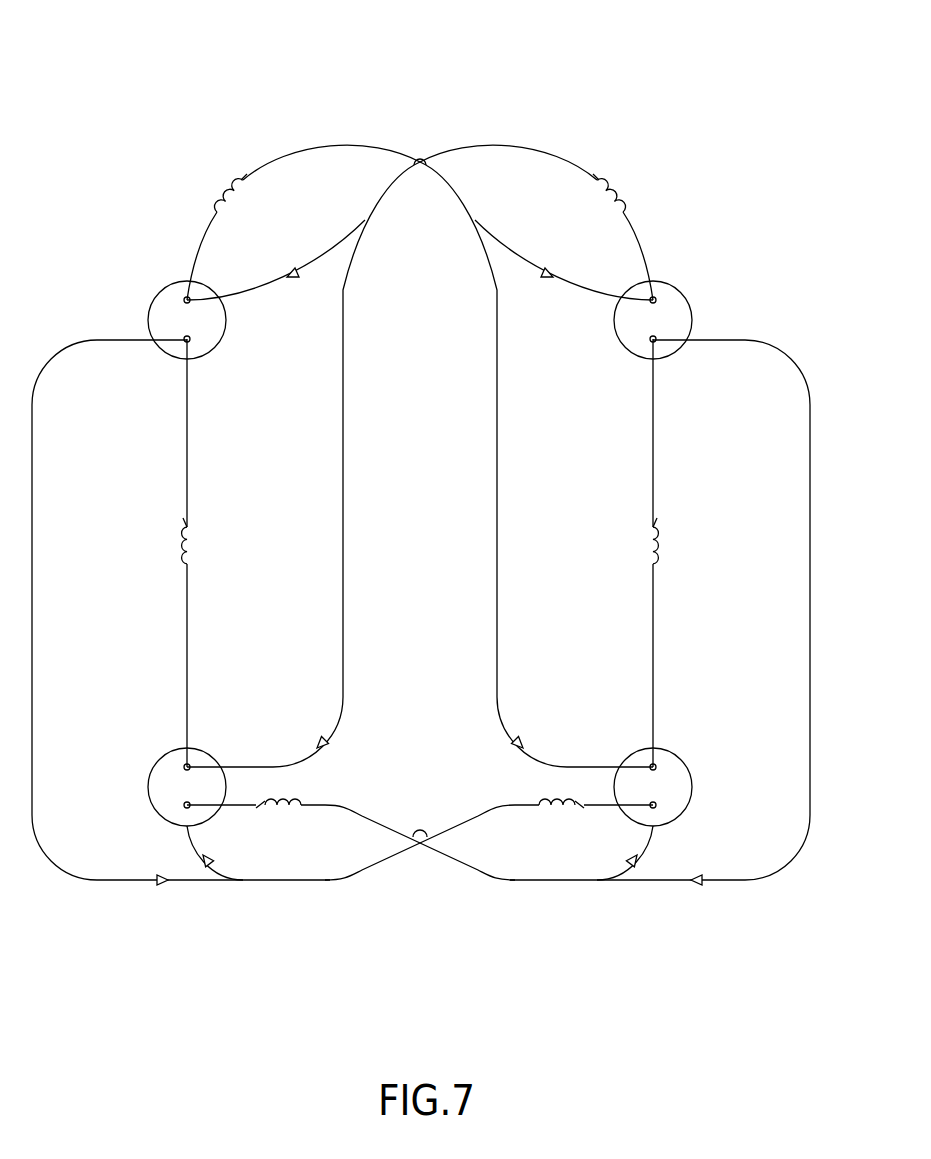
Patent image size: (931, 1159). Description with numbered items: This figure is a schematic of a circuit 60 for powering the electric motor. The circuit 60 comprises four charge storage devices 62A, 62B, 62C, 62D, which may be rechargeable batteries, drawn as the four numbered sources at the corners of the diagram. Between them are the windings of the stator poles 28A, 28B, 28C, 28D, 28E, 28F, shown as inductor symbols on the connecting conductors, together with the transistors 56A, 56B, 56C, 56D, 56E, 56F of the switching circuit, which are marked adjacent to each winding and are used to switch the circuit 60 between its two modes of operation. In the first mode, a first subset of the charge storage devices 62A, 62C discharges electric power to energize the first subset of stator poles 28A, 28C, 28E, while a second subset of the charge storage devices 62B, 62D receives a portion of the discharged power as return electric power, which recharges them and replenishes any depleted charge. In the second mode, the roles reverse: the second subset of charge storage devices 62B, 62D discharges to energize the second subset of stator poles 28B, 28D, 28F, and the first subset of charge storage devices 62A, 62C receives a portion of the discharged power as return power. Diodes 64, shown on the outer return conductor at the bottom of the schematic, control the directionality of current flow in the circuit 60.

The circuit 60 is at (85, 78).
The stator pole 28A is at (218, 190).
The stator pole 28B is at (628, 187).
The stator pole 28C is at (175, 545).
The stator pole 28D is at (667, 545).
The stator pole 28E is at (300, 792).
The stator pole 28F is at (540, 792).
The transistor 56A is at (236, 163).
The transistor 56B is at (607, 163).
The transistor 56C is at (178, 520).
The transistor 56D is at (662, 520).
The transistor 56E is at (260, 818).
The transistor 56F is at (580, 818).
The charge storage device 62A is at (224, 336).
The charge storage device 62B is at (616, 336).
The charge storage device 62C is at (152, 770).
The charge storage device 62D is at (688, 770).
The diode 64 is at (160, 895).